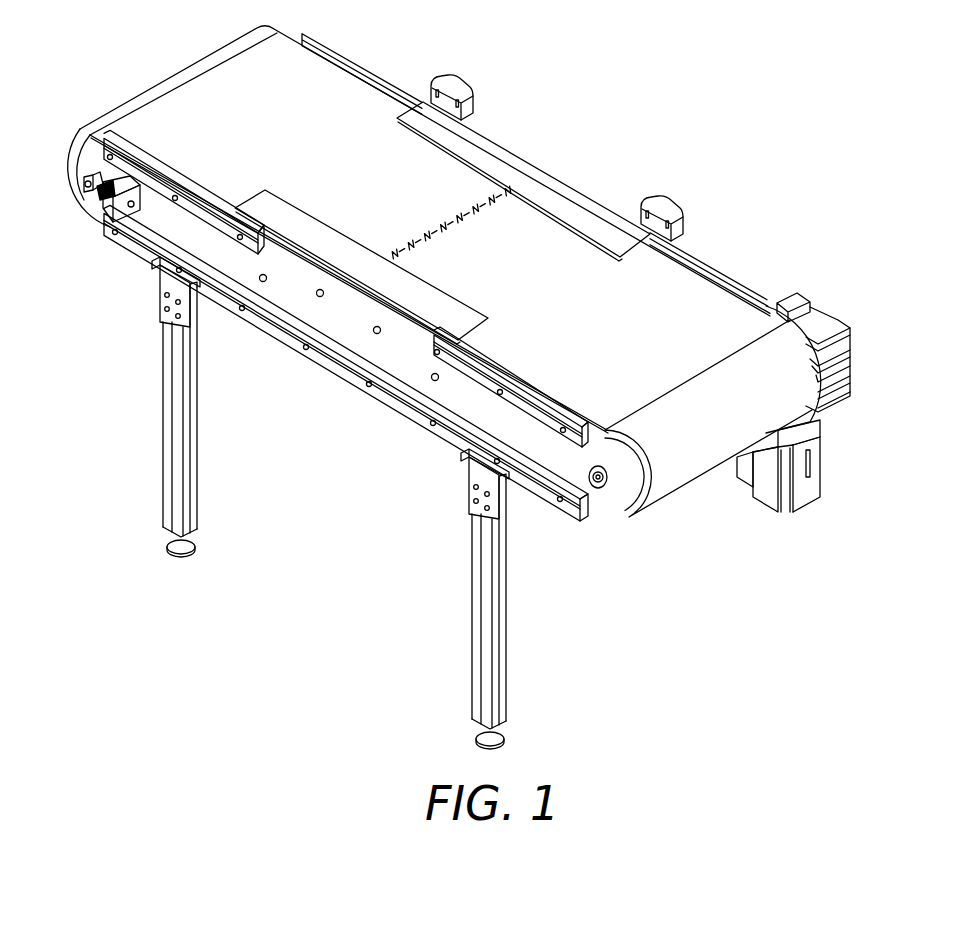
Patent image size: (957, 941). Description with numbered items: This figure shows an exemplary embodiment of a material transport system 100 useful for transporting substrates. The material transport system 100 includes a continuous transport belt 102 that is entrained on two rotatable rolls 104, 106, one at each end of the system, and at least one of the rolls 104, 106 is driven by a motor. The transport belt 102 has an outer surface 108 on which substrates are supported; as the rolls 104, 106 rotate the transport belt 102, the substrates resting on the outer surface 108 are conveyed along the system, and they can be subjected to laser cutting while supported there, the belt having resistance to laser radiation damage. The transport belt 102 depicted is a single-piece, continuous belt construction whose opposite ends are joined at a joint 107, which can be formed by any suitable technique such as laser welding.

The material transport system 100 is at (697, 175).
The transport belt 102 is at (717, 303).
The rotatable roll 104 is at (86, 186).
The rotatable roll 106 is at (597, 490).
The joint 107 is at (435, 238).
The outer surface 108 is at (307, 62).